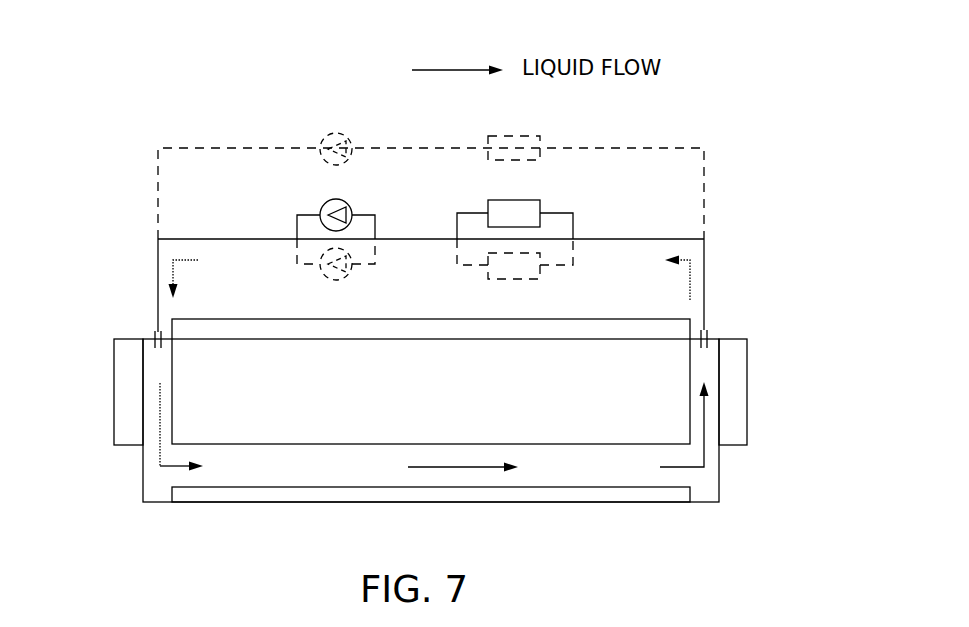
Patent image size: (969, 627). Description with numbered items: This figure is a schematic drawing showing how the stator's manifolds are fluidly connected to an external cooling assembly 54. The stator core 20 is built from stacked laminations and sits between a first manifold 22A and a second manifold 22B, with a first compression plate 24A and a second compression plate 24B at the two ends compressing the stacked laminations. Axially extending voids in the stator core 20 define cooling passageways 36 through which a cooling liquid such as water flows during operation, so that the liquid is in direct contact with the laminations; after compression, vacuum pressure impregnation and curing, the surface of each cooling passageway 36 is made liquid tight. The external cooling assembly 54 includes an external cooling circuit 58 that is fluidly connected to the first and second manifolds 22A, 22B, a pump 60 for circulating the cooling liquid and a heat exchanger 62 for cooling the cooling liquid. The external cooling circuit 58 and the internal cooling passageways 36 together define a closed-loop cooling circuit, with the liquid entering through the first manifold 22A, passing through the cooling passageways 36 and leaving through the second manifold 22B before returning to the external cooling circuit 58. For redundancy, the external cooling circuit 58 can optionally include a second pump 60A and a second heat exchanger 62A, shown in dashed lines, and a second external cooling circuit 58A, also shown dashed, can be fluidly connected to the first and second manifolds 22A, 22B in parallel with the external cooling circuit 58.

The stator core 20 is at (605, 358).
The first manifold 22A is at (158, 363).
The second manifold 22B is at (703, 360).
The first compression plate 24A is at (128, 378).
The second compression plate 24B is at (733, 373).
The cooling passageway 36 is at (597, 481).
The external cooling assembly 54 is at (748, 156).
The external cooling circuit 58 is at (228, 239).
The second external cooling circuit 58A is at (158, 183).
The pump 60 is at (346, 201).
The second pump 60A is at (332, 280).
The heat exchanger 62 is at (520, 200).
The second heat exchanger 62A is at (513, 280).